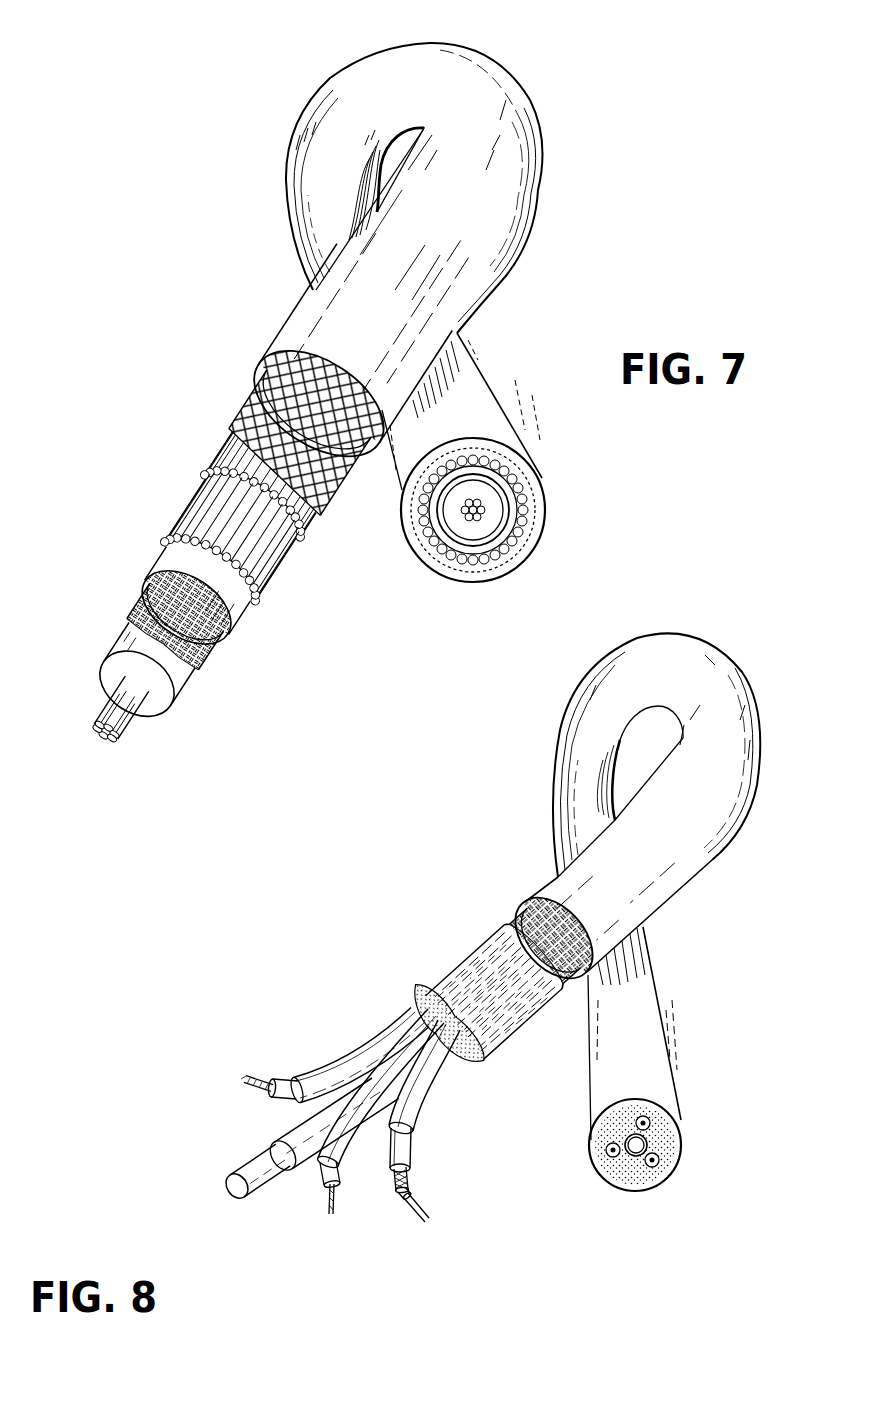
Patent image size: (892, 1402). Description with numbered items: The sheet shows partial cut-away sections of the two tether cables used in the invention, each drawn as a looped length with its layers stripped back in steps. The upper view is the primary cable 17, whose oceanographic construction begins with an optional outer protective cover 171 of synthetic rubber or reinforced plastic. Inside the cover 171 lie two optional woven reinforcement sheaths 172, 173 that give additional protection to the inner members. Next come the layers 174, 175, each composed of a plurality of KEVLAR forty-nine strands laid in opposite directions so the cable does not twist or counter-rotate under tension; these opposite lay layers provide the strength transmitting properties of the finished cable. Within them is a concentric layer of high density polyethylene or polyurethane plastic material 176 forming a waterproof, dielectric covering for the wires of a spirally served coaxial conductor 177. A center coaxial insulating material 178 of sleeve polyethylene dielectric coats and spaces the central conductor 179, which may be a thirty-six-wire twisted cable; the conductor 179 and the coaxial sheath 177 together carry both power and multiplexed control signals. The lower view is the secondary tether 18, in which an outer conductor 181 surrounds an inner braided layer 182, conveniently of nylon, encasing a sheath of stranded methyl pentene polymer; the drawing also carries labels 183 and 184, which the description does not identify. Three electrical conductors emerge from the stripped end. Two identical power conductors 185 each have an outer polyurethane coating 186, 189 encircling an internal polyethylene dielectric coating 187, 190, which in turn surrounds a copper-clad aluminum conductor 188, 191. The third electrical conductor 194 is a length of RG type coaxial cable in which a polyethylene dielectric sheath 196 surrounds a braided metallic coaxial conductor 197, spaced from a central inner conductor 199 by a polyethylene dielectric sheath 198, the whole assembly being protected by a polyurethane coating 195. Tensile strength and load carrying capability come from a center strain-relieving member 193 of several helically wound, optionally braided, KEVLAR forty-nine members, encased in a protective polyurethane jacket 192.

In FIG. 7, the primary cable 17 is at (241, 141).
In FIG. 7, the outer protective cover 171 is at (284, 338).
In FIG. 7, the woven reinforcement sheath 172 is at (257, 393).
In FIG. 7, the woven reinforcement sheath 173 is at (238, 430).
In FIG. 7, the layer of KEVLAR-49 strands 174 is at (211, 477).
In FIG. 7, the layer of KEVLAR-49 strands 175 is at (178, 524).
In FIG. 7, the concentric layer of plastic material 176 is at (148, 581).
In FIG. 7, the spirally served coaxial conductor 177 is at (137, 618).
In FIG. 7, the center coaxial insulating material 178 is at (108, 658).
In FIG. 7, the central conductor 179 is at (102, 716).
In FIG. 8, the secondary tether 18 is at (363, 899).
In FIG. 8, the outer conductor 181 is at (550, 887).
In FIG. 8, the inner braided layer 182 is at (520, 915).
In FIG. 8, the fibrous filler 183 is at (497, 1040).
In FIG. 8, the foam filler core end 184 is at (398, 1015).
In FIG. 8, the power conductors 185 is at (324, 1078).
In FIG. 8, the outer polyurethane coating 186 is at (345, 1140).
In FIG. 8, the internal polyethylene dielectric coating 187 is at (338, 1178).
In FIG. 8, the copper-clad aluminum conductor 188 is at (330, 1208).
In FIG. 8, the outer polyurethane coating 189 is at (347, 1069).
In FIG. 8, the internal polyethylene dielectric coating 190 is at (283, 1081).
In FIG. 8, the copper-clad aluminum conductor 191 is at (248, 1086).
In FIG. 8, the protective polyurethane jacket 192 is at (292, 1126).
In FIG. 8, the center strain-relieving member 193 is at (240, 1166).
In FIG. 8, the third electrical conductor 194 is at (423, 1091).
In FIG. 8, the polyurethane coating 195 is at (414, 1121).
In FIG. 8, the polyethylene dielectric sheath 196 is at (408, 1157).
In FIG. 8, the braided metallic coaxial conductor 197 is at (414, 1181).
In FIG. 8, the polyethylene dielectric sheath 198 is at (407, 1195).
In FIG. 8, the central inner conductor 199 is at (428, 1218).